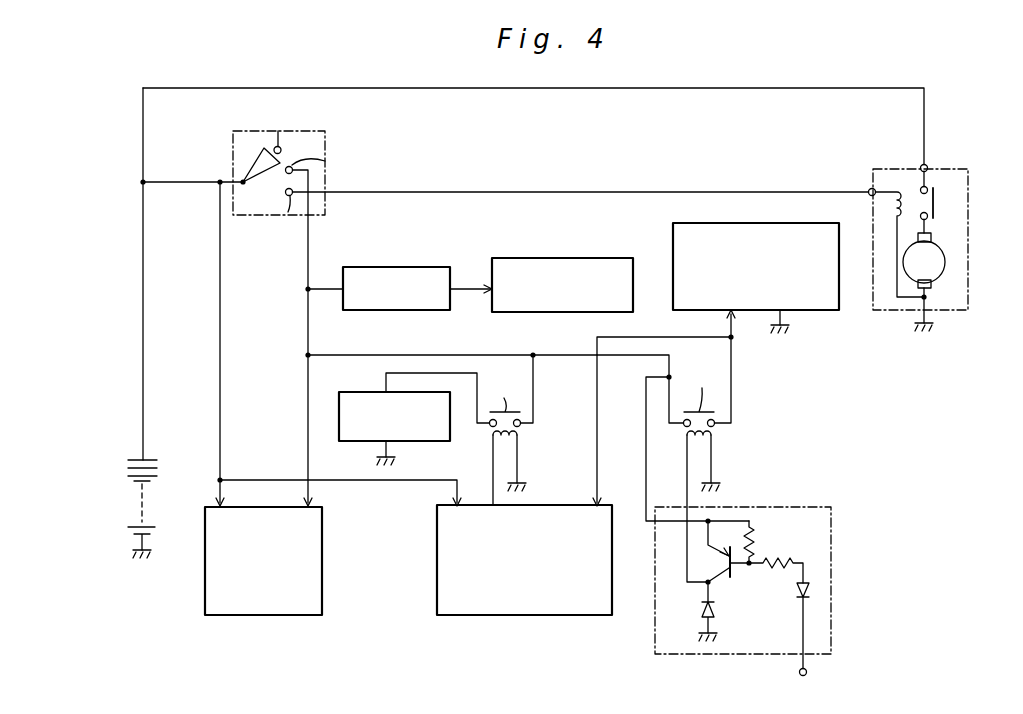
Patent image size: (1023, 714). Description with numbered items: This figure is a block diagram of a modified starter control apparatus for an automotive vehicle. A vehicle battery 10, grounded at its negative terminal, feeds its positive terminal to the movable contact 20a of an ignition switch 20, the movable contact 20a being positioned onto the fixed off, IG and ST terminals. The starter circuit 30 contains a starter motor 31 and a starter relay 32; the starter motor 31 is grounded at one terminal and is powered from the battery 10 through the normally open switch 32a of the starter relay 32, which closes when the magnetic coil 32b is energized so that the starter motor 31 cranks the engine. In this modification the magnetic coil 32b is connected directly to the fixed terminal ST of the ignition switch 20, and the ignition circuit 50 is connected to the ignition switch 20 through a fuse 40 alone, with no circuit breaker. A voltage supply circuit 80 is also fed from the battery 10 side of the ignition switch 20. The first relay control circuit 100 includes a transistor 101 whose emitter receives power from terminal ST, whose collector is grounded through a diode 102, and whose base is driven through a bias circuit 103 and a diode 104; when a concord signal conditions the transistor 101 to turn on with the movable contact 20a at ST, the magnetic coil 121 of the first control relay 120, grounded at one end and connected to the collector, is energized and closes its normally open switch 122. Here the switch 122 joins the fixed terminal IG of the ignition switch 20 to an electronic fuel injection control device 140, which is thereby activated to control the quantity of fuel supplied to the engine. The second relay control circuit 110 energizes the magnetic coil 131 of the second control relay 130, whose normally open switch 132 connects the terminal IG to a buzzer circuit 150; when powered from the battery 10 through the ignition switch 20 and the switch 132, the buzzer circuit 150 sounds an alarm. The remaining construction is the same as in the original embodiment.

The vehicle battery 10 is at (126, 490).
The ignition switch 20 is at (308, 172).
The movable contact 20a is at (264, 175).
The starter circuit 30 is at (914, 219).
The starter motor 31 is at (935, 271).
The starter relay 32 is at (911, 220).
The normally open switch 32a is at (933, 203).
The magnetic coil 32b is at (919, 178).
The fuse 40 is at (408, 299).
The ignition circuit 50 is at (574, 299).
The voltage supply circuit 80 is at (275, 570).
The first relay control circuit 100 is at (749, 559).
The transistor 101 is at (725, 572).
The diode 102 is at (700, 610).
The bias circuit 103 is at (762, 555).
The diode 104 is at (792, 598).
The second relay control circuit 110 is at (543, 570).
The first control relay 120 is at (731, 472).
The magnetic coil 121 is at (714, 445).
The normally open switch 122 is at (701, 394).
The second control relay 130 is at (532, 442).
The magnetic coil 131 is at (520, 438).
The normally open switch 132 is at (503, 403).
The electronic fuel injection control device 140 is at (786, 221).
The buzzer circuit 150 is at (365, 392).